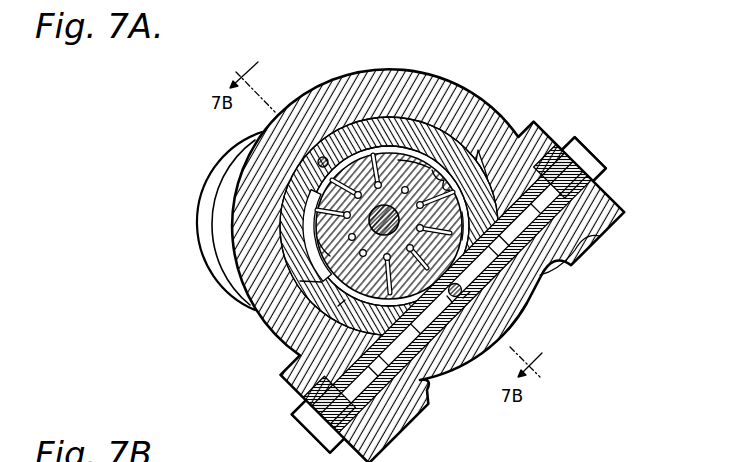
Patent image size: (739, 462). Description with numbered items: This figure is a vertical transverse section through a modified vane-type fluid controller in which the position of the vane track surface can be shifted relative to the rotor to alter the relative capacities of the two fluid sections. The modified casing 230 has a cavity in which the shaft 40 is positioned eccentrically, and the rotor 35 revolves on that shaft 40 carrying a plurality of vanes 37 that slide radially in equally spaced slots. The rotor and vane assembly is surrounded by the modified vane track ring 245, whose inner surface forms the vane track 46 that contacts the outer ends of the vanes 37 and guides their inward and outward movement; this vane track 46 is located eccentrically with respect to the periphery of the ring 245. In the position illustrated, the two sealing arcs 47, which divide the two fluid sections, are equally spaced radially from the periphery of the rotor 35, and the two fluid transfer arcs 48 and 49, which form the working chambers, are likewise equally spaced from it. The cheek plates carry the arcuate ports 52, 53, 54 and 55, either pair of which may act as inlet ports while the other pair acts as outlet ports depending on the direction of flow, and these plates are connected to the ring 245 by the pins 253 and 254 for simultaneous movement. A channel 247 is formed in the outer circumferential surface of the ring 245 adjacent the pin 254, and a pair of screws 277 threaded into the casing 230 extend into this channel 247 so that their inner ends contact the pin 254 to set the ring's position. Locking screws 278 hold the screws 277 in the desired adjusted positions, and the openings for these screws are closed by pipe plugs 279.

The casing 230 is at (376, 70).
The vane track ring 245 is at (360, 120).
The pin 253 is at (327, 156).
The sealing arc 47 is at (385, 211).
The port 52 is at (406, 158).
The fluid transfer arc 48 is at (474, 158).
The vane track 46 is at (440, 176).
The channel 247 is at (415, 256).
The port 54 is at (455, 202).
The port 55 is at (322, 191).
The shaft 40 is at (384, 220).
The vane 37 is at (314, 249).
The rotor 35 is at (300, 282).
The fluid transfer arc 49 is at (276, 314).
The port 53 is at (336, 309).
The pin 254 is at (462, 297).
The screw 277 is at (447, 288).
The locking screw 278 is at (591, 239).
The pipe plug 279 is at (451, 293).